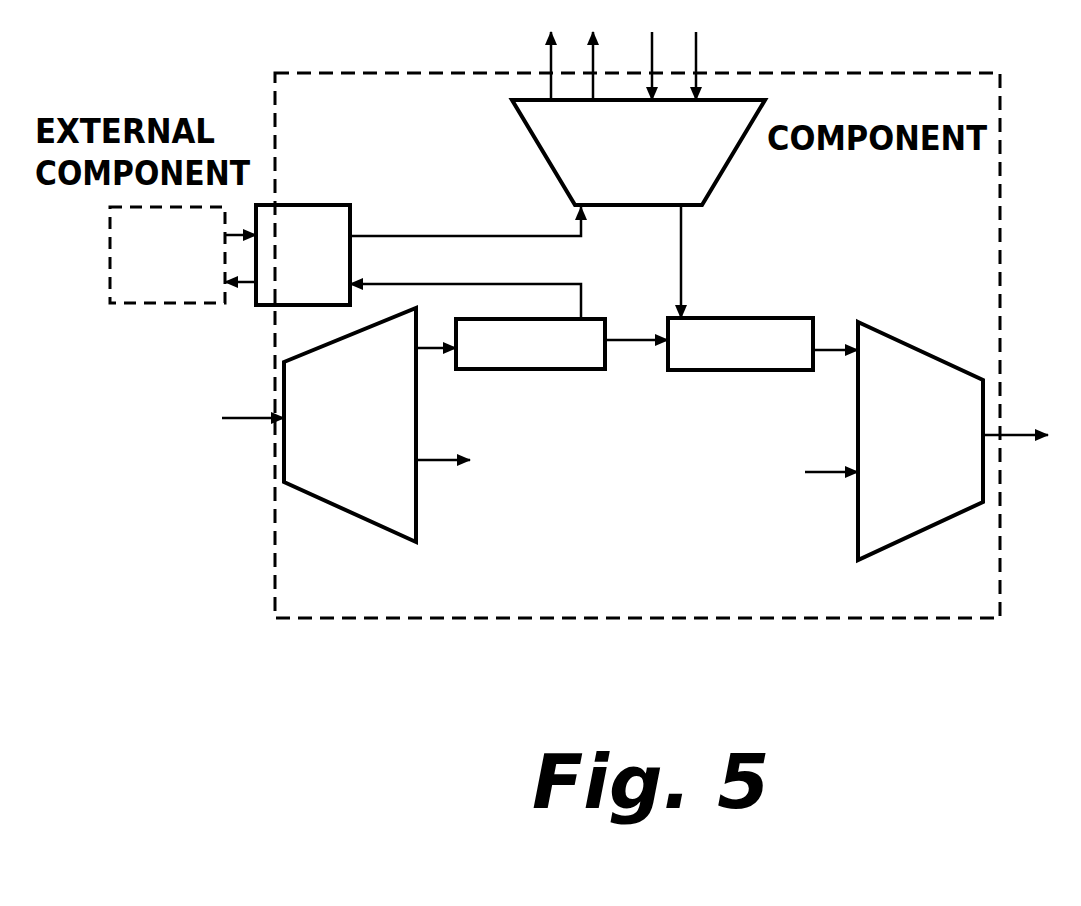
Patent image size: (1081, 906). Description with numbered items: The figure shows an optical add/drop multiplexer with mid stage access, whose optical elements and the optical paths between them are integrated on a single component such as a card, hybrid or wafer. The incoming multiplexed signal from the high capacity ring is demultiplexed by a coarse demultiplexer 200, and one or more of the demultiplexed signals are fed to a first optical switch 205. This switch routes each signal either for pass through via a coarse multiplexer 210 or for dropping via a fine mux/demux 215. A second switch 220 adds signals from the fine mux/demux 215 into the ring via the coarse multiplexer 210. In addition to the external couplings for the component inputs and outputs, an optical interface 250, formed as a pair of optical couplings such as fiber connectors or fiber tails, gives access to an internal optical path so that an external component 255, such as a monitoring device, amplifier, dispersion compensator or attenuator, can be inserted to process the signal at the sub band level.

The coarse demultiplexer 200 is at (378, 505).
The first optical switch 205 is at (572, 360).
The coarse multiplexer 210 is at (937, 500).
The fine mux/demux 215 is at (712, 158).
The second switch 220 is at (780, 360).
The optical interface 250 is at (337, 222).
The external component 255 is at (173, 295).